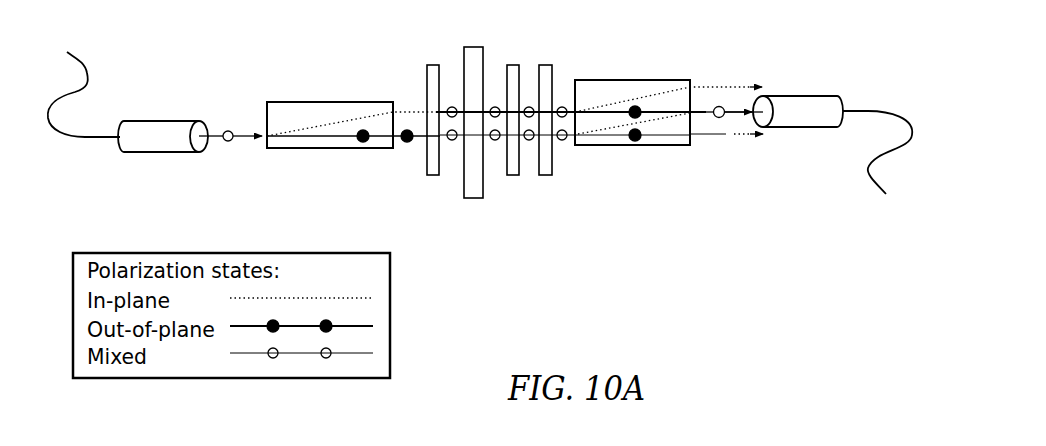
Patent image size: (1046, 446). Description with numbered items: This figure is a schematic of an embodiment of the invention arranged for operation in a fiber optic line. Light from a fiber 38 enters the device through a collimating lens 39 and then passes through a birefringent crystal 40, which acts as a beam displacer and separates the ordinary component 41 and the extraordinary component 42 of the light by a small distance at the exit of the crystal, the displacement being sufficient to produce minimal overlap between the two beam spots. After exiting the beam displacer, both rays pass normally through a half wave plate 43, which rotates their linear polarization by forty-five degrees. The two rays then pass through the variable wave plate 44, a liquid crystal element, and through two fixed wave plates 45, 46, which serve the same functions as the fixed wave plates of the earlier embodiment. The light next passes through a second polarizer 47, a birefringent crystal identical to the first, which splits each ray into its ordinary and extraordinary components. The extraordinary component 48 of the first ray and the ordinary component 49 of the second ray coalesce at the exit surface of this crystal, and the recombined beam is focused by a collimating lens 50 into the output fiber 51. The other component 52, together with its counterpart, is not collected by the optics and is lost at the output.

The fiber 38 is at (83, 63).
The collimating lens 39 is at (168, 121).
The birefringent crystal 40 is at (290, 103).
The ordinary component 41 is at (327, 137).
The extraordinary component 42 is at (371, 113).
The half wave plate 43 is at (433, 177).
The variable wave plate 44 is at (473, 47).
The fixed wave plate 45 is at (513, 175).
The fixed wave plate 46 is at (547, 65).
The second polarizer 47 is at (594, 80).
The extraordinary component of R1 48 is at (657, 117).
The ordinary component of R2 49 is at (663, 111).
The collimating lens 50 is at (815, 96).
The output fiber 51 is at (870, 177).
The other component 52 is at (728, 134).